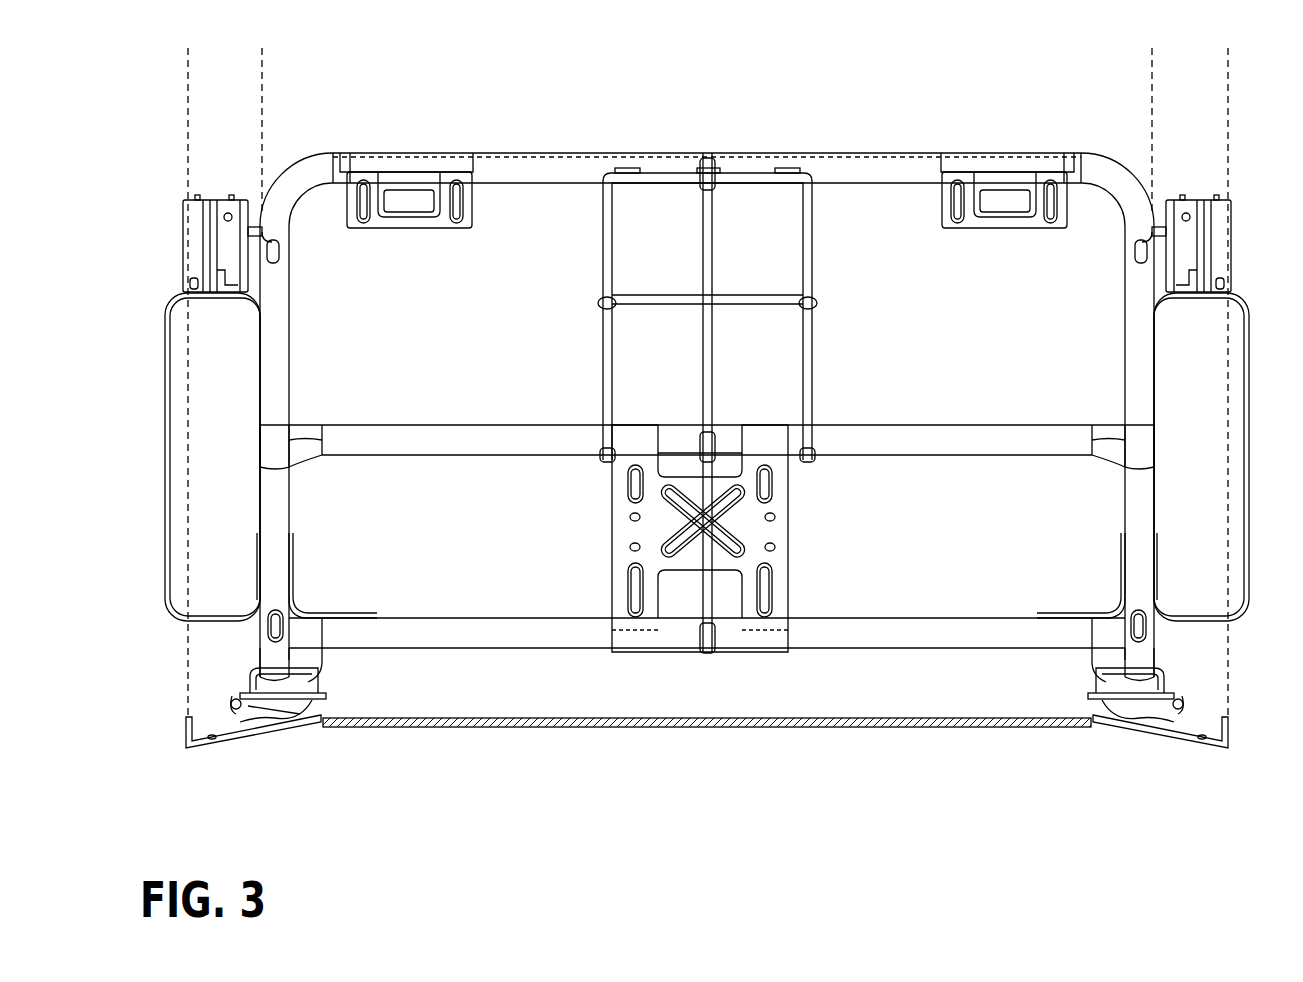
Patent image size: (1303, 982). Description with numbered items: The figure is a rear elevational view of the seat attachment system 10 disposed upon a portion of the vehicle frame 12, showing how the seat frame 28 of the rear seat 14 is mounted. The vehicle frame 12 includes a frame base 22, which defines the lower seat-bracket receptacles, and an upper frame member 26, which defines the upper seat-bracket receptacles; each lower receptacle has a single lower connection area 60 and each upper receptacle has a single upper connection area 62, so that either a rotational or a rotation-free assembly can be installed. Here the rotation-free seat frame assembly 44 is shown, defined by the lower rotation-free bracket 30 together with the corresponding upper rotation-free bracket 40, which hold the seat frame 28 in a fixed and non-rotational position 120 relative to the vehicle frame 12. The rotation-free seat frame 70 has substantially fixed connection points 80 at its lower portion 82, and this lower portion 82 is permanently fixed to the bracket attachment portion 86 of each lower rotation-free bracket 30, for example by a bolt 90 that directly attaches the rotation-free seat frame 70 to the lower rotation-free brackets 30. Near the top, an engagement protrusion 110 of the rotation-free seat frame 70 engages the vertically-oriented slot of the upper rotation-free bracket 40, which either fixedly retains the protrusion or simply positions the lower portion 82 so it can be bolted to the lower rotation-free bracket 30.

The seat attachment system 10 is at (706, 443).
The vehicle frame 12 is at (668, 753).
The rear seat 14 is at (633, 372).
The frame base 22 is at (558, 727).
The upper frame member 26 is at (233, 93).
The seat frame 28 is at (846, 147).
The lower rotation-free bracket 30 is at (288, 716).
The upper rotation-free bracket 40 is at (1220, 242).
The rotation-free seat frame assembly 44 is at (1264, 552).
The lower connection area 60 is at (1153, 722).
The upper connection area 62 is at (188, 284).
The rotation-free seat frame 70 is at (845, 636).
The fixed connection points 80 is at (1123, 702).
The lower portion 82 is at (278, 653).
The bracket attachment portion 86 is at (282, 708).
The bolt 90 is at (236, 705).
The engagement protrusion 110 is at (1142, 235).
The fixed and non-rotational position 120 is at (1264, 414).